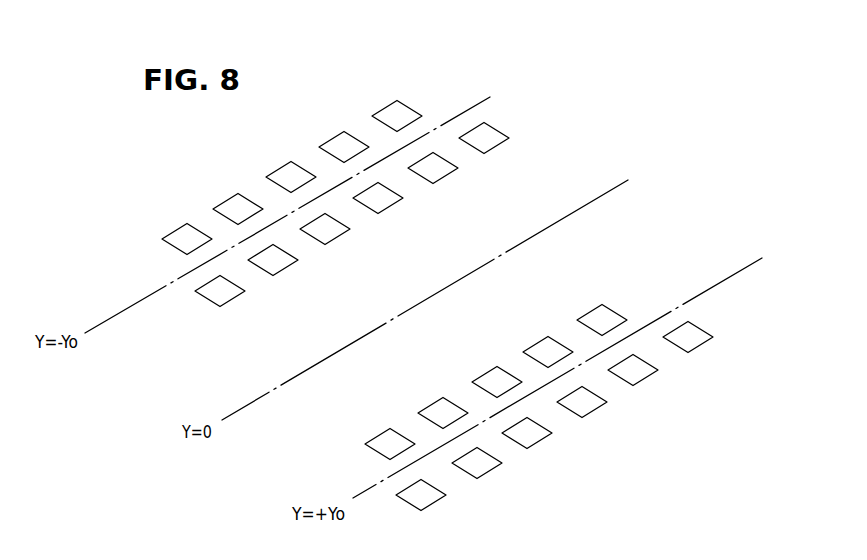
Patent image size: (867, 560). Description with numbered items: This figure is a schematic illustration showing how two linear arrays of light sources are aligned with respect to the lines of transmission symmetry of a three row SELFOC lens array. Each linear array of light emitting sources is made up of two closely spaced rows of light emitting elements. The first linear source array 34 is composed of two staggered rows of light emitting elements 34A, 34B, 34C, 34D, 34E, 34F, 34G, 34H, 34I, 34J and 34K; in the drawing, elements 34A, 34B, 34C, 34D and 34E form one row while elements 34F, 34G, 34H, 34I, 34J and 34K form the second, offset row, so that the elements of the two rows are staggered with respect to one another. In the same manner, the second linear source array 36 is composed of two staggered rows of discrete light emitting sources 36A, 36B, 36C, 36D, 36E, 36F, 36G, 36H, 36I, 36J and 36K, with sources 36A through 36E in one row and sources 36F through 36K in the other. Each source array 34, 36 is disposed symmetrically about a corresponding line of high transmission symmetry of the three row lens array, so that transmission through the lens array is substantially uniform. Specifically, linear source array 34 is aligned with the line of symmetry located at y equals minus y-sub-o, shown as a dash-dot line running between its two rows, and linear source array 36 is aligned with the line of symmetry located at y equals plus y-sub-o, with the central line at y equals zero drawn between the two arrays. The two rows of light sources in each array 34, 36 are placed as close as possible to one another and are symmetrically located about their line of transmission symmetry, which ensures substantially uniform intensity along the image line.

The linear source array 34 is at (438, 92).
The light emitting element 34A is at (177, 232).
The light emitting element 34B is at (228, 202).
The light emitting element 34C is at (281, 170).
The light emitting element 34D is at (334, 140).
The light emitting element 34E is at (387, 109).
The light emitting element 34F is at (230, 298).
The light emitting element 34G is at (283, 267).
The light emitting element 34H is at (335, 236).
The light emitting element 34I is at (388, 205).
The light emitting element 34J is at (443, 175).
The light emitting element 34K is at (494, 145).
The linear source array 36 is at (643, 298).
The light emitting source 36A is at (380, 437).
The light emitting source 36B is at (433, 406).
The light emitting source 36C is at (487, 375).
The light emitting source 36D is at (538, 345).
The light emitting source 36E is at (592, 313).
The light emitting source 36F is at (431, 502).
The light emitting source 36G is at (487, 470).
The light emitting source 36H is at (537, 440).
The light emitting source 36I is at (592, 409).
The light emitting source 36J is at (643, 377).
The light emitting source 36K is at (698, 344).